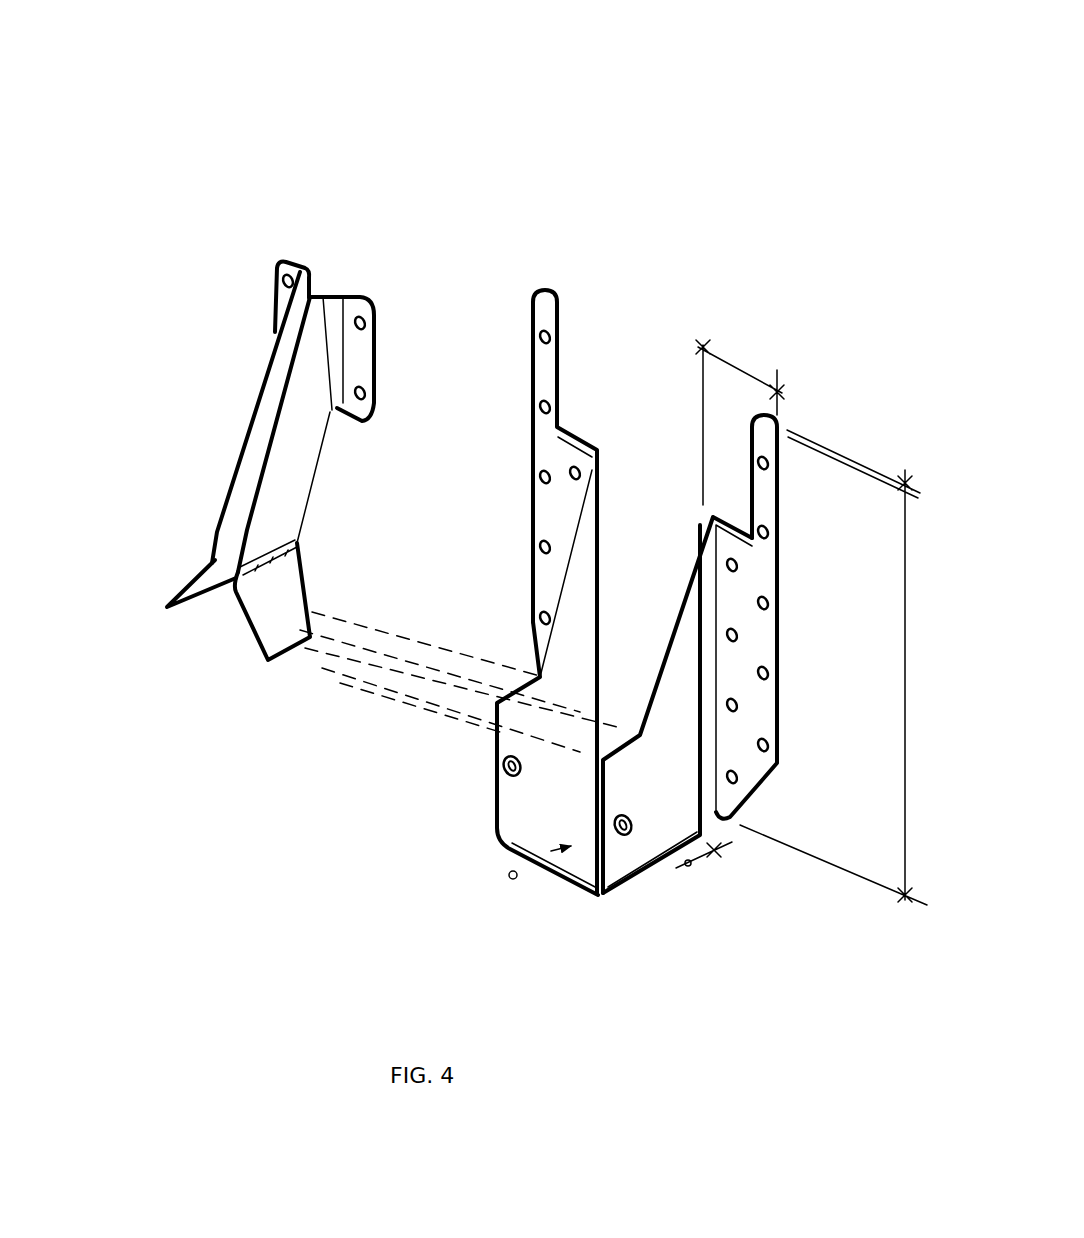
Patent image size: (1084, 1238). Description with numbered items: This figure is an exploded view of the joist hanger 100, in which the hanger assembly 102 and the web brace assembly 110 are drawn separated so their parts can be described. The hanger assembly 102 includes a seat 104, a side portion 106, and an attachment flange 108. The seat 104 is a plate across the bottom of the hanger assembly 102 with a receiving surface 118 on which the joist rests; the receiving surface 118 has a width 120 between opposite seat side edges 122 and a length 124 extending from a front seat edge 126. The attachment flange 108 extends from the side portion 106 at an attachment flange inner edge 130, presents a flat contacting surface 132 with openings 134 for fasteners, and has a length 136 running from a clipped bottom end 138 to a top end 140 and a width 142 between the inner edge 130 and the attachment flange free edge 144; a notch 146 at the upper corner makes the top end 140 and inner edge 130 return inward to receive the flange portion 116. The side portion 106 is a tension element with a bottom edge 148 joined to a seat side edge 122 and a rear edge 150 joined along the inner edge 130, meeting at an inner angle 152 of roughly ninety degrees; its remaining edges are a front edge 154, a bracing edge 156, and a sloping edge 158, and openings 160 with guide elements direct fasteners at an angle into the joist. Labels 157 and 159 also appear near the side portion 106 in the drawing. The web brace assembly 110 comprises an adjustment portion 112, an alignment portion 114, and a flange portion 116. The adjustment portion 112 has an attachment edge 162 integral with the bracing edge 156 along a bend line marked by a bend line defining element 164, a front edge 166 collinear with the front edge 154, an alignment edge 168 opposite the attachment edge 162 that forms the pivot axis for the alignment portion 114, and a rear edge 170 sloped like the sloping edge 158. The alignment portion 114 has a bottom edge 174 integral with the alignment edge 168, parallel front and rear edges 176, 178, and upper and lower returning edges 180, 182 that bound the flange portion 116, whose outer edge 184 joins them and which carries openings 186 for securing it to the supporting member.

The joist hanger 100 is at (581, 96).
The hanger assembly 102 is at (728, 346).
The seat 104 is at (458, 840).
The side portion 106 is at (682, 866).
The attachment flange 108 is at (753, 645).
The web brace assembly 110 is at (343, 241).
The adjustment portion 112 is at (281, 599).
The alignment portion 114 is at (291, 477).
The flange portion 116 is at (361, 357).
The receiving surface 118 is at (492, 848).
The width 120 is at (511, 878).
The seat side edges 122 is at (517, 822).
The length 124 is at (693, 865).
The front seat edge 126 is at (533, 867).
The attachment flange inner edge 130 is at (720, 603).
The contacting surface 132 is at (805, 681).
The openings 134 is at (545, 547).
The length 136 is at (843, 667).
The bottom end 138 is at (747, 802).
The top end 140 is at (543, 292).
The width 142 is at (740, 422).
The attachment flange free edge 144 is at (532, 468).
The notch 146 is at (734, 469).
The bottom edge 148 is at (548, 512).
The rear edge 150 is at (587, 587).
The inner angle 152 is at (672, 853).
The front edge 154 is at (493, 752).
The bracing edge 156 is at (522, 688).
The side wall edge 157 is at (695, 612).
The sloping edge 158 is at (570, 555).
The side wall bend line 159 is at (675, 647).
The openings 160 is at (507, 760).
The attachment edge 162 is at (283, 662).
The bend line defining element 164 is at (297, 543).
The front edge 166 is at (242, 618).
The alignment edge 168 is at (240, 573).
The rear edge 170 is at (303, 565).
The bottom edge 174 is at (253, 555).
The front edge 176 is at (277, 427).
The rear edge 178 is at (320, 460).
The upper returning edge 180 is at (313, 297).
The lower returning edge 182 is at (352, 421).
The outer edge 184 is at (370, 337).
The openings 186 is at (343, 307).